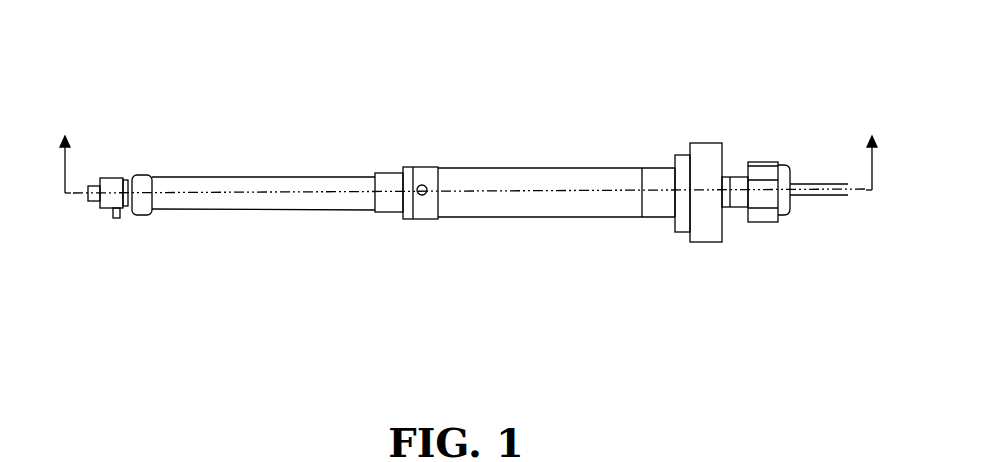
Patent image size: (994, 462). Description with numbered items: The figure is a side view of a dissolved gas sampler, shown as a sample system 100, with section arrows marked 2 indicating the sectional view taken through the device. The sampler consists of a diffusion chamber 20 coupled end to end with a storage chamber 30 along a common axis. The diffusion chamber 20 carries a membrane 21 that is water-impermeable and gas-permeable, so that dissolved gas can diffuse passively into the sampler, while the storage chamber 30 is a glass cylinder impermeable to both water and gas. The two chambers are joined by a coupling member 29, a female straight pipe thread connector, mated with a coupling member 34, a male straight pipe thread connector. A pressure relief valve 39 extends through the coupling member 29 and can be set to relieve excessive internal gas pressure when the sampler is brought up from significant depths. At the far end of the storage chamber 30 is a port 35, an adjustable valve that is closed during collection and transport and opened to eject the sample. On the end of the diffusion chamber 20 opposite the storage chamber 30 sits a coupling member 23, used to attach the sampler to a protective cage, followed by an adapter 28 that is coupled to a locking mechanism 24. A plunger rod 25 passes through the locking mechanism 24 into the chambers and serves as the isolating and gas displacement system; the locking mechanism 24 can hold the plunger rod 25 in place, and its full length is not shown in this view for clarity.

The sample system 100 is at (423, 284).
The section line 2- 2 is at (468, 154).
The diffusion chamber 20 is at (507, 198).
The membrane 21 is at (585, 168).
The coupling member 23 is at (698, 242).
The locking mechanism 24 is at (753, 222).
The plunger rod 25 is at (802, 195).
The adapter 28 is at (733, 177).
The coupling member 29 is at (422, 167).
The storage chamber 30 is at (242, 210).
The coupling member 34 is at (398, 173).
The port 35 is at (115, 178).
The pressure relief valve 39 is at (423, 196).